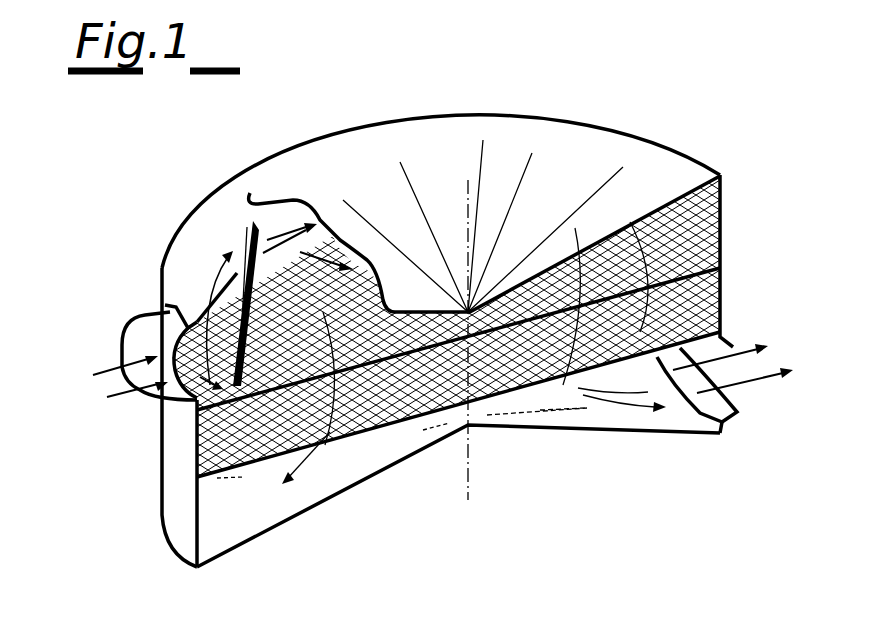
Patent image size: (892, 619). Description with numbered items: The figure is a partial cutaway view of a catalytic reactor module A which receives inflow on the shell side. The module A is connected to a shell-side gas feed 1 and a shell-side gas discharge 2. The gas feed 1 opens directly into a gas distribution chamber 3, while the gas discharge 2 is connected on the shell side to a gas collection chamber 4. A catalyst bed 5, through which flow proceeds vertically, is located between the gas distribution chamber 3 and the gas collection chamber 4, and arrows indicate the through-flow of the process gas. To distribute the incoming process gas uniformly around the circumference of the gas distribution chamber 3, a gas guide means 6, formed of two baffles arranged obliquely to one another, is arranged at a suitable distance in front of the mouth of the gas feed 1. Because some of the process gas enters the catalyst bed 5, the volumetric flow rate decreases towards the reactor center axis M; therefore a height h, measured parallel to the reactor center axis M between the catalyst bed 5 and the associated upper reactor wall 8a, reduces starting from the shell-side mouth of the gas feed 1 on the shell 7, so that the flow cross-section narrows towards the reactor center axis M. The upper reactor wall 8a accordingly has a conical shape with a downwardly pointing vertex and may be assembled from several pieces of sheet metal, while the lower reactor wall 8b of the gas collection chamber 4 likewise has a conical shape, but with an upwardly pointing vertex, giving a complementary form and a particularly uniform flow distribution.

The shell-side gas feed 1 is at (140, 325).
The shell-side gas discharge 2 is at (737, 407).
The gas distribution chamber 3 is at (268, 199).
The gas collection chamber 4 is at (262, 510).
The catalyst bed 5 is at (217, 433).
The gas guide means 6 is at (247, 230).
The shell 7 is at (183, 517).
The upper reactor wall 8a is at (630, 217).
The lower reactor wall 8b is at (623, 433).
The height h is at (588, 270).
The reactor center axis M is at (470, 478).
The catalytic reactor module A is at (720, 117).